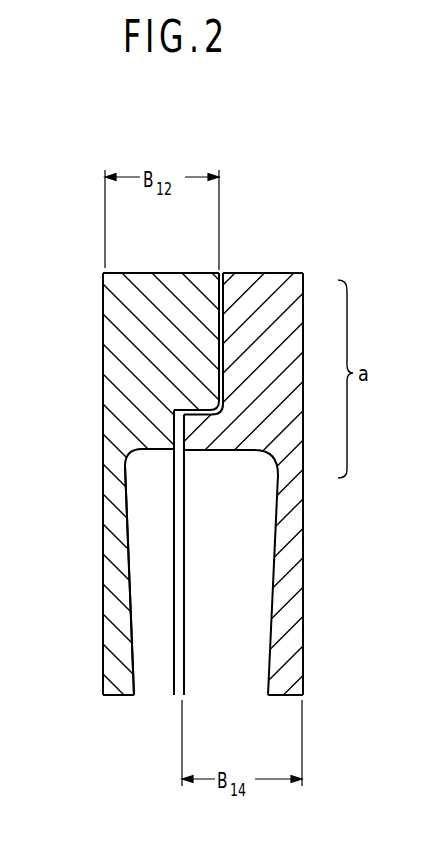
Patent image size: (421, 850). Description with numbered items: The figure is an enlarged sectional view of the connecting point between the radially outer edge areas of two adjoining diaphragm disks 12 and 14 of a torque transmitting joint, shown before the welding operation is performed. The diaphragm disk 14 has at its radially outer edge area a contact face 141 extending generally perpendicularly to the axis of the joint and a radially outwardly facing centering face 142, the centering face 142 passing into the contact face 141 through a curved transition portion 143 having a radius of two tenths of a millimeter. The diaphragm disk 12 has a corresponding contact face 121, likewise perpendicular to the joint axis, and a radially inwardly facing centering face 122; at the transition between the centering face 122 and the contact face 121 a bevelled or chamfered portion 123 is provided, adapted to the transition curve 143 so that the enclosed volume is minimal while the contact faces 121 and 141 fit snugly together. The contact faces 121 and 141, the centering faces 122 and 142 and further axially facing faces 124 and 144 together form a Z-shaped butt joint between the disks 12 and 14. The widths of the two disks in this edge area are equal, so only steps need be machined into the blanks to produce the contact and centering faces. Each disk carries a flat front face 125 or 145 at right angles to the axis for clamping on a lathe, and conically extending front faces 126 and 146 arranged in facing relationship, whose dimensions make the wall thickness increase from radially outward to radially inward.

The diaphragm disk 12 is at (98, 268).
The contact face 121 is at (217, 286).
The centering face 122 is at (210, 408).
The bevelled or chamfered portion 123 is at (216, 403).
The axially facing face 124 is at (172, 429).
The flat front face 125 is at (100, 675).
The conically extending front face 126 is at (130, 574).
The diaphragm disk 14 is at (305, 270).
The contact face 141 is at (225, 286).
The centering face 142 is at (205, 420).
The curved transition portion 143 is at (220, 413).
The axially facing face 144 is at (186, 440).
The flat front face 145 is at (306, 660).
The conically extending front face 146 is at (272, 587).